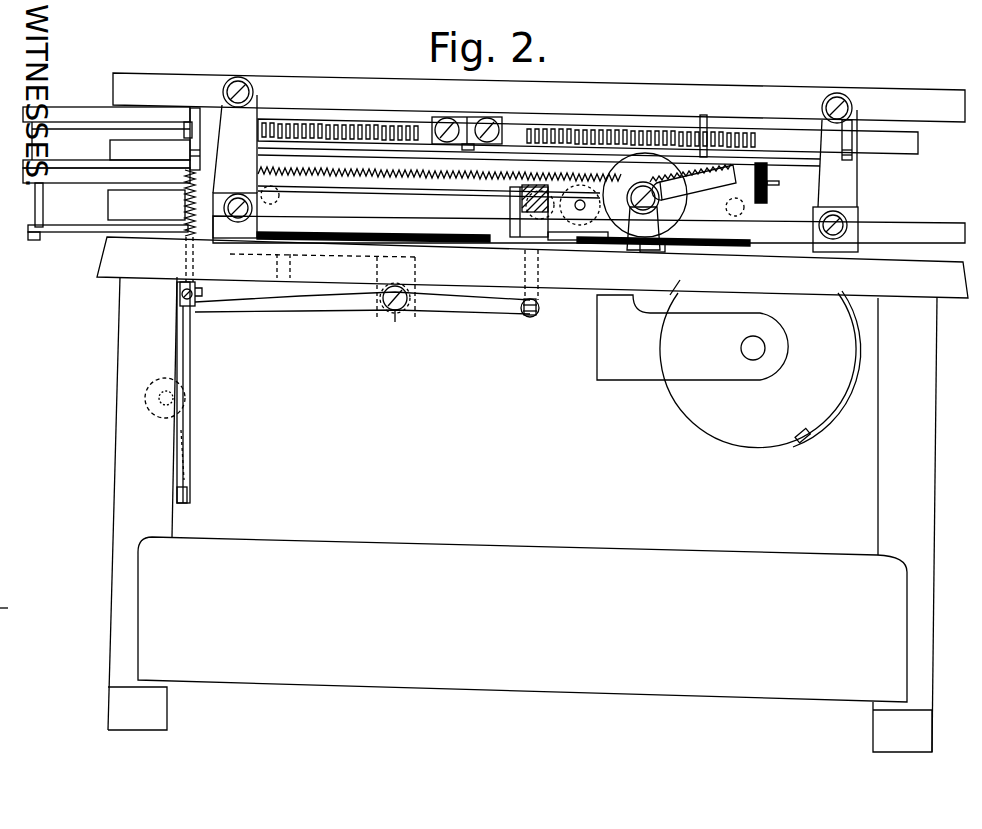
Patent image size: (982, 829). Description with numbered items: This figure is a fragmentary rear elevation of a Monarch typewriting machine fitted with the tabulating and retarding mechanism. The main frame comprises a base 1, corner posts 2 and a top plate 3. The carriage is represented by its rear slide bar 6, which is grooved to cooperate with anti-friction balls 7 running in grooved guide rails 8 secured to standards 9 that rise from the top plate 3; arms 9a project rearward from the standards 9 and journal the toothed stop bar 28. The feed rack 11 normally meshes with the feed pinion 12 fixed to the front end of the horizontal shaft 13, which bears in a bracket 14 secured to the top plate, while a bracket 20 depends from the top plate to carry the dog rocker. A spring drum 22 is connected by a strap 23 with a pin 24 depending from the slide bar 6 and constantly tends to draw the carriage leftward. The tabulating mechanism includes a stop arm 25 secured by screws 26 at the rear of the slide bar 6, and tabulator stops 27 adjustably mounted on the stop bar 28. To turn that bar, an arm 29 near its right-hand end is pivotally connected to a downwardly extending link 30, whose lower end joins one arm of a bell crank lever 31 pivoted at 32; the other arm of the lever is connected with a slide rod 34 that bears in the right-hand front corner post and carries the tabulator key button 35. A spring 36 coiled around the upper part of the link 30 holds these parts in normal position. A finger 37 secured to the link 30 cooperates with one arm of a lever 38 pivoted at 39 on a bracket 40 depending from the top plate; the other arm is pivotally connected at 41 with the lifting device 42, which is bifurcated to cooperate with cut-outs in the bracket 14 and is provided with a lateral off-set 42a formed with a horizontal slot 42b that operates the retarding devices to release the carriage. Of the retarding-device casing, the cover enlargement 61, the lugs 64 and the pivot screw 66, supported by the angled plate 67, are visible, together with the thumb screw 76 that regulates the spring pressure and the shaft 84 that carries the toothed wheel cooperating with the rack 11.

The base 1 is at (479, 556).
The corner posts 2 is at (116, 560).
The top plate 3 is at (157, 276).
The slide bar 6 is at (52, 114).
The anti-friction balls 7 is at (275, 118).
The guide rails 8 is at (366, 68).
The standards 9 is at (255, 97).
The arms 9a is at (225, 118).
The feed rack 11 is at (346, 180).
The feed pinion 12 is at (522, 200).
The horizontal shaft 13 is at (537, 186).
The bracket 14 is at (510, 222).
The bracket 20 is at (620, 381).
The spring drum 22 is at (733, 447).
The strap 23 is at (70, 233).
The pin 24 is at (43, 200).
The stop arm 25 is at (468, 142).
The screws 26 is at (487, 120).
The tabulator stops 27 is at (706, 120).
The toothed stop bar 28 is at (600, 122).
The arm 29 is at (188, 134).
The link 30 is at (190, 376).
The bell crank lever 31 is at (176, 432).
The pivot 32 is at (188, 494).
The slide rod 34 is at (160, 395).
The tabulator key button 35 is at (148, 411).
The spring 36 is at (187, 218).
The finger 37 is at (196, 306).
The lever 38 is at (322, 306).
The pivot 39 is at (395, 316).
The bracket 40 is at (417, 272).
The pivotal connection 41 is at (531, 318).
The lifting device 42 is at (540, 303).
The lateral off-set 42a is at (574, 238).
The horizontal slot 42b is at (644, 228).
The enlargement 61 is at (708, 198).
The lugs 64 is at (666, 154).
The screw 66 is at (630, 198).
The angled plate 67 is at (652, 252).
The thumb screw 76 is at (768, 182).
The shaft 84 is at (580, 200).